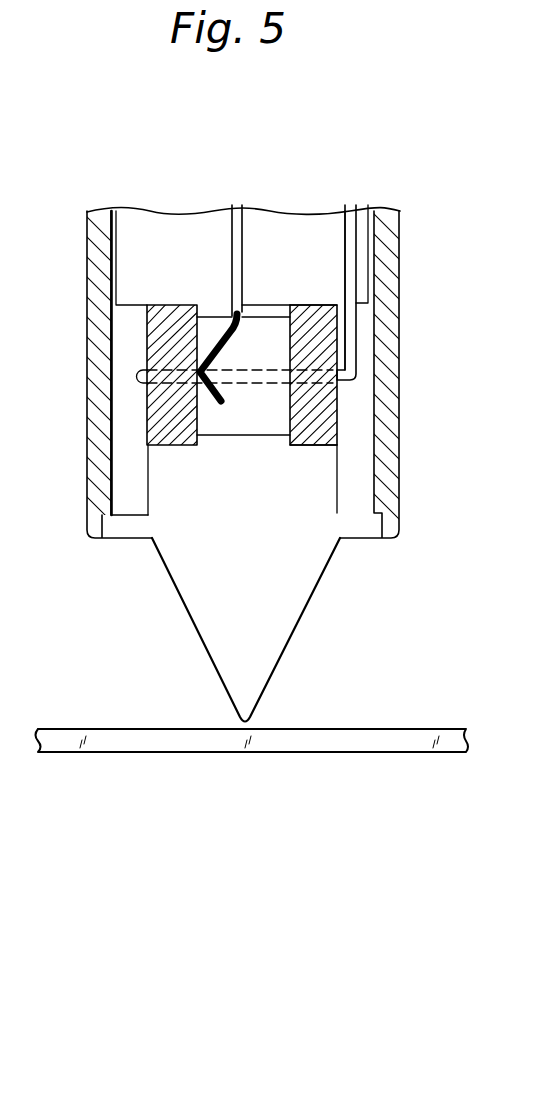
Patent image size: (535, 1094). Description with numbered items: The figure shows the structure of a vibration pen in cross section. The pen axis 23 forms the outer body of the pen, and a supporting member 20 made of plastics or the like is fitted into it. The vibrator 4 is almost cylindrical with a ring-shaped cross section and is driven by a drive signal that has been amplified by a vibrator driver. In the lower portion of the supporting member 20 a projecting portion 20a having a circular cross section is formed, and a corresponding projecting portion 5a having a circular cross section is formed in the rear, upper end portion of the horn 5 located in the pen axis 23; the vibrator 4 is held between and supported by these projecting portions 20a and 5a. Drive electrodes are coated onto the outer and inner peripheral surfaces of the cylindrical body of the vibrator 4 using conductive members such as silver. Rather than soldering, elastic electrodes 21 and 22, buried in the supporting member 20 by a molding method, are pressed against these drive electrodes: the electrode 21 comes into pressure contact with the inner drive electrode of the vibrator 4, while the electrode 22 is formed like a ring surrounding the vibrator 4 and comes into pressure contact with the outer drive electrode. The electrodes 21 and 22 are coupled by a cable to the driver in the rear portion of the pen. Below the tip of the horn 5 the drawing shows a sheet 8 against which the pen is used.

The supporting member 20 is at (172, 222).
The elastic electrode 21 is at (256, 215).
The elastic electrode 22 is at (358, 212).
The pen axis 23 is at (400, 263).
The projecting portion 20a is at (278, 320).
The vibrator 4 is at (343, 416).
The projecting portion 5a is at (275, 436).
The horn 5 is at (305, 617).
The sheet 8 is at (355, 726).